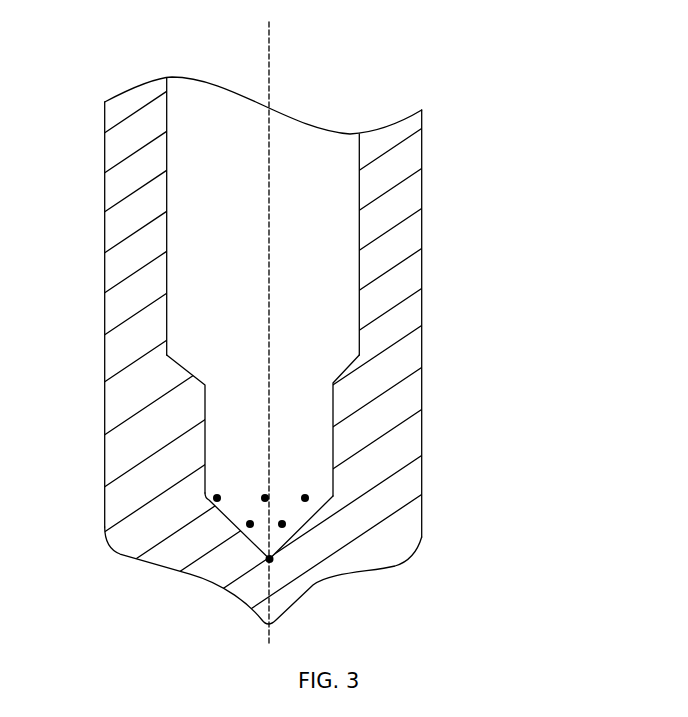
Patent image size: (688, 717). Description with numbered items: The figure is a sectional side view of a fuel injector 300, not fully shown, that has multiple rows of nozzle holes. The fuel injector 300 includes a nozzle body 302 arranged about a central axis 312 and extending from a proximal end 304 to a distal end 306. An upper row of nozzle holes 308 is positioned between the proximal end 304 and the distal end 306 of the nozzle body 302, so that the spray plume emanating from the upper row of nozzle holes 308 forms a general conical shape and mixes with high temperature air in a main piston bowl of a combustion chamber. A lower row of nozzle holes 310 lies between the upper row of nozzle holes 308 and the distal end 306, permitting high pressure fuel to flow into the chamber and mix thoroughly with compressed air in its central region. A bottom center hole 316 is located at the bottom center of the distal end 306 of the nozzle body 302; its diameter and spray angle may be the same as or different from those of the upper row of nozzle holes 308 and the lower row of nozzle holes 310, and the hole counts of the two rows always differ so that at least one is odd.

The fuel injector 300 is at (460, 110).
The nozzle body 302 is at (333, 418).
The proximal end 304 is at (359, 300).
The distal end 306 is at (287, 548).
The upper row of nozzle holes 308 is at (305, 498).
The lower row of nozzle holes 310 is at (282, 525).
The central axis 312 is at (269, 78).
The bottom center hole 316 is at (268, 559).